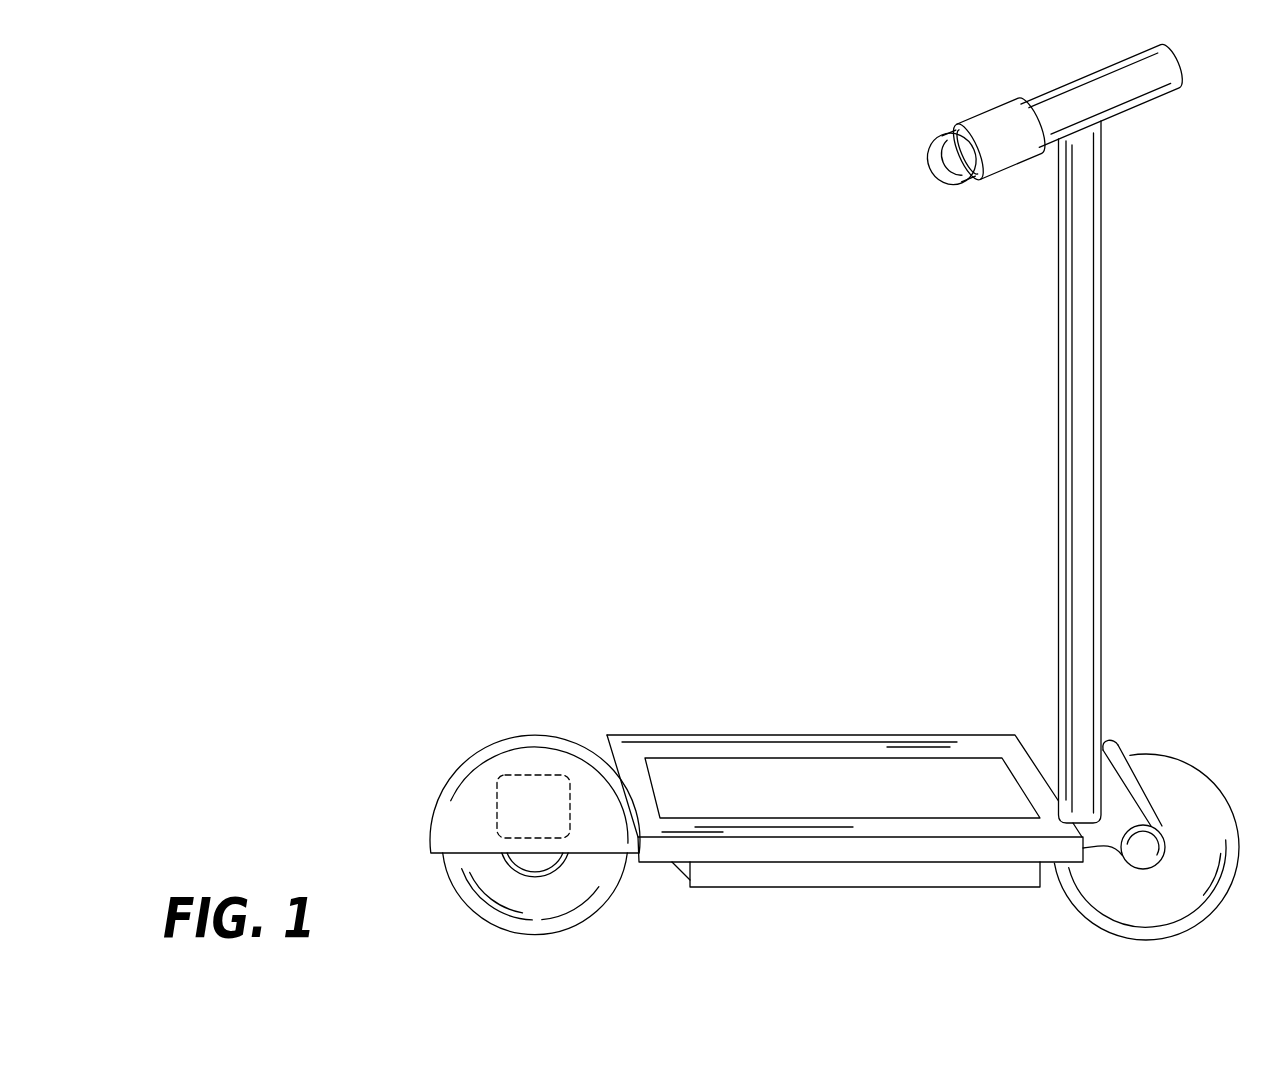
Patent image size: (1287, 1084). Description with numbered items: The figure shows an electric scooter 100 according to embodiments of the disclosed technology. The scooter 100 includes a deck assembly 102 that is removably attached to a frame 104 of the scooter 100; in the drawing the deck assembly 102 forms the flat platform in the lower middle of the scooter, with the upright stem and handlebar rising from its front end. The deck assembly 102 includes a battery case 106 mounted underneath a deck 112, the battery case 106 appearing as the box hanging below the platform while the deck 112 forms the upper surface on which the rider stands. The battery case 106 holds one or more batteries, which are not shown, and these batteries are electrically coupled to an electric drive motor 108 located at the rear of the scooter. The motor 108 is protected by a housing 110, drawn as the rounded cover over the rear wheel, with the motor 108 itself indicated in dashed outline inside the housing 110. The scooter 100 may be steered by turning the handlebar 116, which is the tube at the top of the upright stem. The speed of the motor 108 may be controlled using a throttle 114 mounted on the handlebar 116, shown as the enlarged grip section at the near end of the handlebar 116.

The electric scooter 100 is at (622, 490).
The deck assembly 102 is at (845, 751).
The frame 104 is at (692, 745).
The battery case 106 is at (845, 875).
The electric drive motor 108 is at (498, 798).
The housing 110 is at (527, 750).
The deck 112 is at (836, 799).
The throttle 114 is at (988, 122).
The handlebar 116 is at (1127, 110).